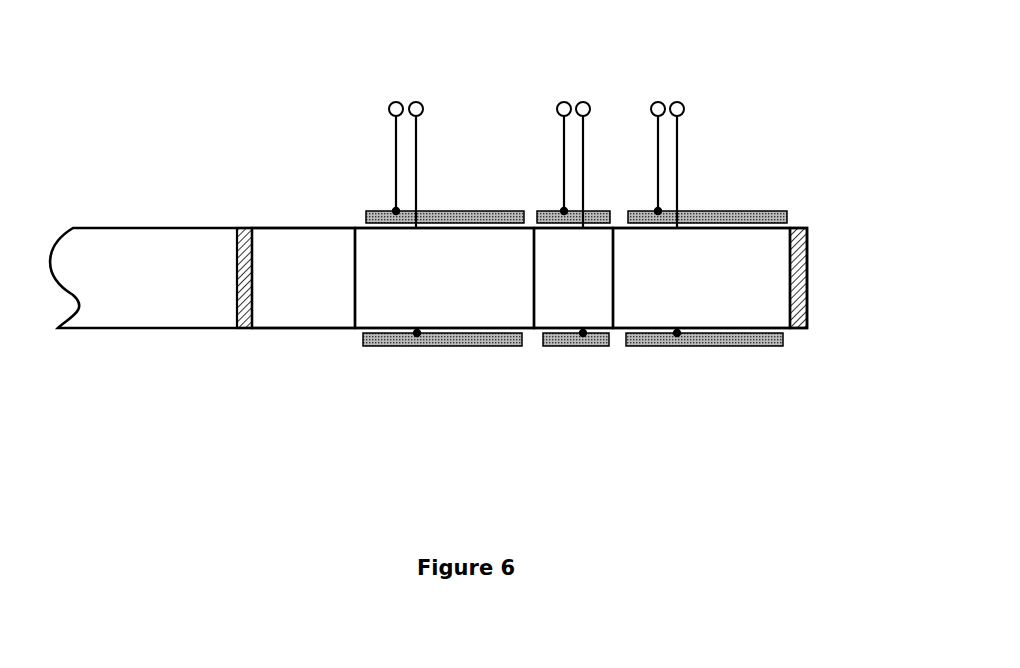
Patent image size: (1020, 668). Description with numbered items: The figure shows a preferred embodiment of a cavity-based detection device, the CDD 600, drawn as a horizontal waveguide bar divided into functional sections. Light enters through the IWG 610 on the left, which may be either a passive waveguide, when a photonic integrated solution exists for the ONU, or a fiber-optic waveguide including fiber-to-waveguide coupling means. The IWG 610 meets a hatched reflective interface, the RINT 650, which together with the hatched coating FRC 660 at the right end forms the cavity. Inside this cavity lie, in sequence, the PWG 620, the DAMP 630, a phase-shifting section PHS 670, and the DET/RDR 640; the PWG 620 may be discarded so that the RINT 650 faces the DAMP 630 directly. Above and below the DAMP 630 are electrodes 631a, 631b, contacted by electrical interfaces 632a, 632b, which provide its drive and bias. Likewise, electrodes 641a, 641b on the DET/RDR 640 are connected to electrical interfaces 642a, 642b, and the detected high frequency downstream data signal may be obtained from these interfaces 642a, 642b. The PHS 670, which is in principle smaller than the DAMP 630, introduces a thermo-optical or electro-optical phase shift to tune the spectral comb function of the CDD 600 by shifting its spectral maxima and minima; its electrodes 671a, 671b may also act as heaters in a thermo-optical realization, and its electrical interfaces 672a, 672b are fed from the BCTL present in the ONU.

The CDD 600 is at (163, 473).
The IWG 610 is at (102, 226).
The PWG 620 is at (301, 329).
The DAMP 630 is at (377, 278).
The electrode 631a is at (372, 210).
The electrode 631b is at (433, 346).
The electrical interface 632a is at (389, 106).
The electrical interface 632b is at (416, 101).
The DET/RDR 640 is at (635, 290).
The electrode 641a is at (745, 210).
The electrode 641b is at (697, 347).
The electrical interface 642a is at (658, 101).
The electrical interface 642b is at (684, 108).
The RINT 650 is at (237, 286).
The FRC 660 is at (808, 288).
The phase-shifting section (PHS) 670 is at (550, 298).
The electrode 671a is at (542, 210).
The electrode 671b is at (572, 346).
The electrical interface 672a is at (557, 106).
The electrical interface 672b is at (583, 101).